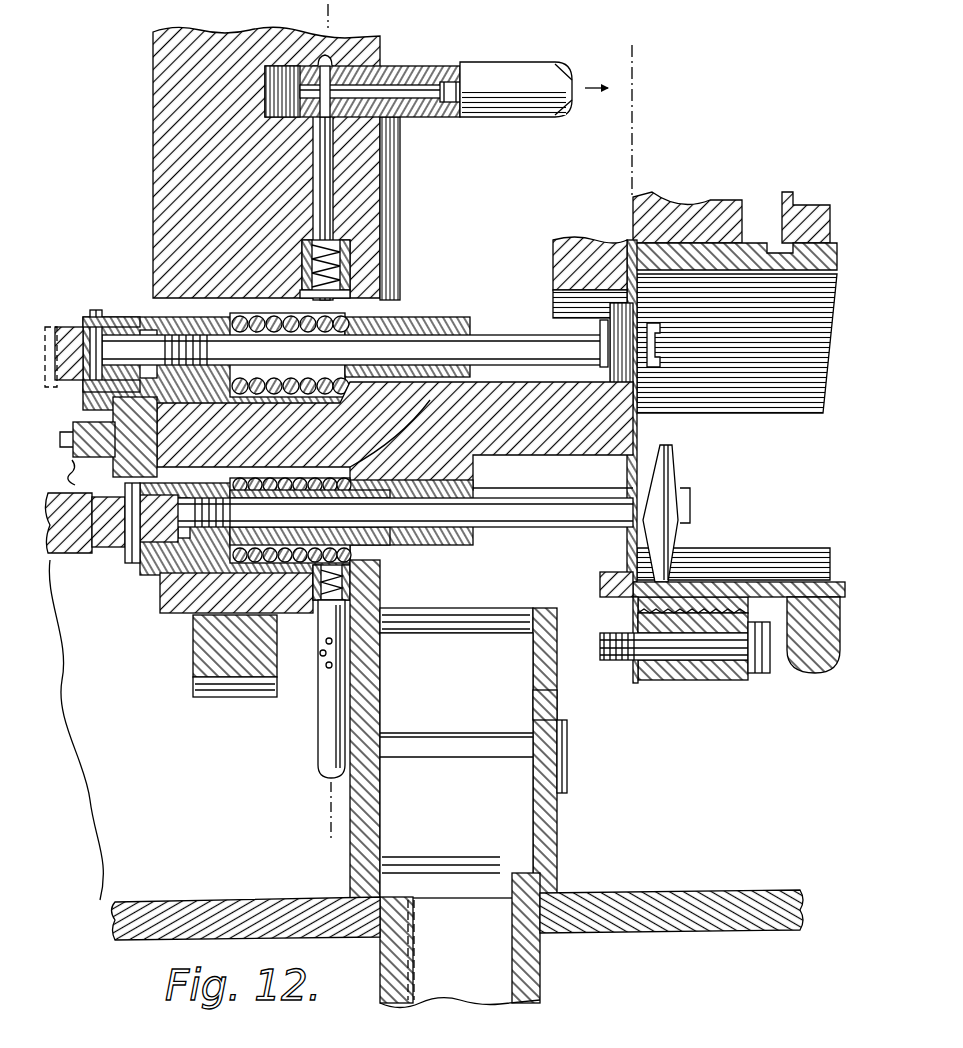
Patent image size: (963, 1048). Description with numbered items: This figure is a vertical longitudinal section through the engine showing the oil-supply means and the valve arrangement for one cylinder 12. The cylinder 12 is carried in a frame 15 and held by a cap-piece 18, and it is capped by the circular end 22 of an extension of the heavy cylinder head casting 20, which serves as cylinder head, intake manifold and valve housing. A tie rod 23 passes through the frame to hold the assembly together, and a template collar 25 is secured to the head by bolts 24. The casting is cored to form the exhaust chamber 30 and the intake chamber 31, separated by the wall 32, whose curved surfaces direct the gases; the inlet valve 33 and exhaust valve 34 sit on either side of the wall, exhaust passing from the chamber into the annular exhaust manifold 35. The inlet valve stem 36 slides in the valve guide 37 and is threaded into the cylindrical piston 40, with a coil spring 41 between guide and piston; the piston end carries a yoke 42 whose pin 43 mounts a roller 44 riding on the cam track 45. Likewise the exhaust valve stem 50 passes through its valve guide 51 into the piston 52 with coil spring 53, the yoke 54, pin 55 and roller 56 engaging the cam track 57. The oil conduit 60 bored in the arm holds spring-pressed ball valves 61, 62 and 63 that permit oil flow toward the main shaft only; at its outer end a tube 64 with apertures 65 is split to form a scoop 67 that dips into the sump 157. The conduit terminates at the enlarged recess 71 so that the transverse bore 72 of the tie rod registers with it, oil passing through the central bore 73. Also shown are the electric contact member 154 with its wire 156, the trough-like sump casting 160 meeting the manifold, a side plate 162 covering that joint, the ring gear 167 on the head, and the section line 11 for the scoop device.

The section line 11 is at (326, 14).
The cylinder 12 is at (800, 590).
The frame 15 is at (808, 200).
The cap-piece 18 is at (818, 672).
The cylinder head casting 20 is at (153, 232).
The circular end of extension 22 is at (612, 684).
The tie rod 23 is at (530, 66).
The bolt 24 is at (700, 657).
The template collar 25 is at (679, 210).
The exhaust chamber 30 is at (527, 560).
The intake chamber 31 is at (503, 262).
The wall 32 is at (638, 430).
The inlet valve 33 is at (548, 306).
The exhaust valve 34 is at (676, 475).
The exhaust manifold 35 is at (560, 703).
The inlet valve stem 36 is at (566, 363).
The valve guide 37 is at (446, 318).
The cylindrical piston 40 is at (150, 316).
The coil spring 41 is at (378, 297).
The yoke 42 is at (105, 316).
The pin 43 is at (92, 316).
The roller 44 is at (72, 328).
The cam track 45 is at (52, 387).
The exhaust valve stem 50 is at (561, 500).
The valve guide 51 is at (481, 497).
The piston 52 is at (178, 615).
The coil spring 53 is at (386, 548).
The yoke 54 is at (139, 576).
The pin 55 is at (128, 566).
The roller 56 is at (105, 552).
The cam track 57 is at (78, 555).
The oil conduit 60 is at (328, 195).
The ball valve 61 is at (352, 590).
The ball valve 62 is at (418, 458).
The ball valve 63 is at (346, 268).
The tube 64 is at (382, 662).
The apertures 65 is at (325, 644).
The scoop 67 is at (318, 760).
The enlarged recess 71 is at (333, 58).
The transverse bore 72 is at (356, 74).
The central bore 73 is at (445, 86).
The electric contact member 154 is at (73, 440).
The wire 156 is at (71, 478).
The sump 157 is at (230, 902).
The sump casting 160 is at (552, 828).
The side plate 162 is at (568, 757).
The ring gear 167 is at (196, 666).